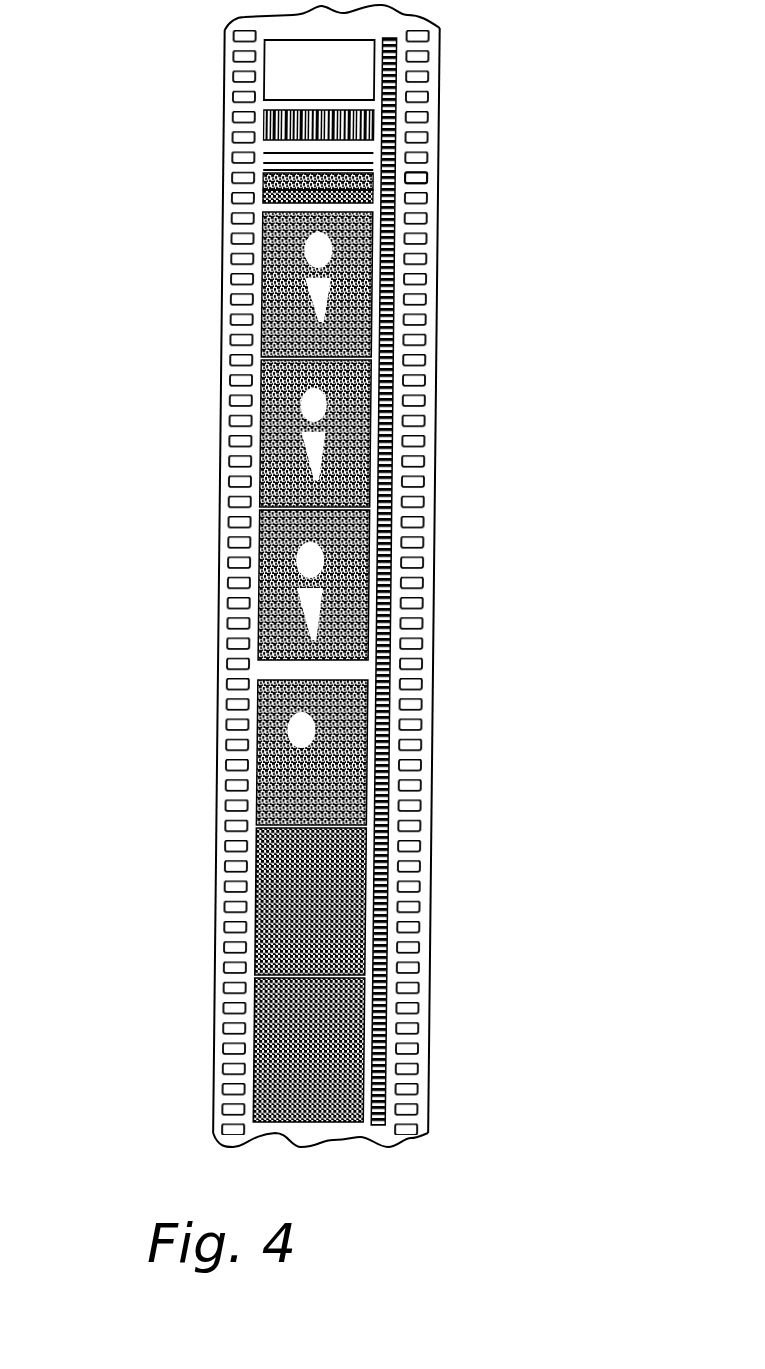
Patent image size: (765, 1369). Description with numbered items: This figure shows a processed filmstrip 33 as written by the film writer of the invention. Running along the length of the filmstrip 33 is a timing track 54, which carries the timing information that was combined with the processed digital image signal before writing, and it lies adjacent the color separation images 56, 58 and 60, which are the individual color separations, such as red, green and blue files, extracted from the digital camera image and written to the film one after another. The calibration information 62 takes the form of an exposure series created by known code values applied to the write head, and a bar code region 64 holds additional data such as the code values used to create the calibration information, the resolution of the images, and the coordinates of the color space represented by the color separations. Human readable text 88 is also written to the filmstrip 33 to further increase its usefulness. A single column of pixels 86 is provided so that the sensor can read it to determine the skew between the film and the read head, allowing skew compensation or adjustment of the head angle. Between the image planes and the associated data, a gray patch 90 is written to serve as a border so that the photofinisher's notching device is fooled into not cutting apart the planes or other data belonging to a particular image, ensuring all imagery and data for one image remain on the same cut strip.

The processed filmstrip 33 is at (433, 633).
The timing track 54 is at (400, 367).
The color separation image 56 is at (263, 290).
The color separation image 58 is at (263, 408).
The color separation image 60 is at (267, 543).
The calibration information 62 is at (412, 178).
The bar code region 64 is at (267, 127).
The single column of pixels 86 is at (275, 152).
The human readable text 88 is at (372, 52).
The gray patch 90 is at (380, 503).